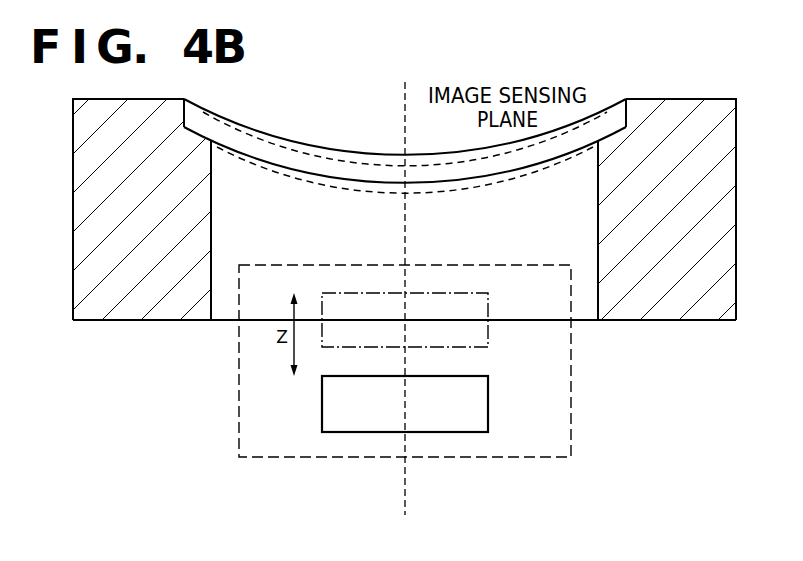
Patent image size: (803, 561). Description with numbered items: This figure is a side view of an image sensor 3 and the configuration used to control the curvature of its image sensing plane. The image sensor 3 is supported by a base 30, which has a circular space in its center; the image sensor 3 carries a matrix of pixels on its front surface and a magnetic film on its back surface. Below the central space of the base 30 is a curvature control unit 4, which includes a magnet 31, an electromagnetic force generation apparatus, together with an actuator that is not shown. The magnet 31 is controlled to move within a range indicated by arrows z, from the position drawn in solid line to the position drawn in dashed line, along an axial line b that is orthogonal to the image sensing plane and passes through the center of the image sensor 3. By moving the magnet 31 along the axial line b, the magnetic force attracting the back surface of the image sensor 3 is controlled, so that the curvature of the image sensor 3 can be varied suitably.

The base 30 is at (707, 99).
The image sensor 3 is at (269, 135).
The magnet 31 is at (489, 412).
The curvature control unit 4 is at (572, 430).
The axial line b is at (407, 492).